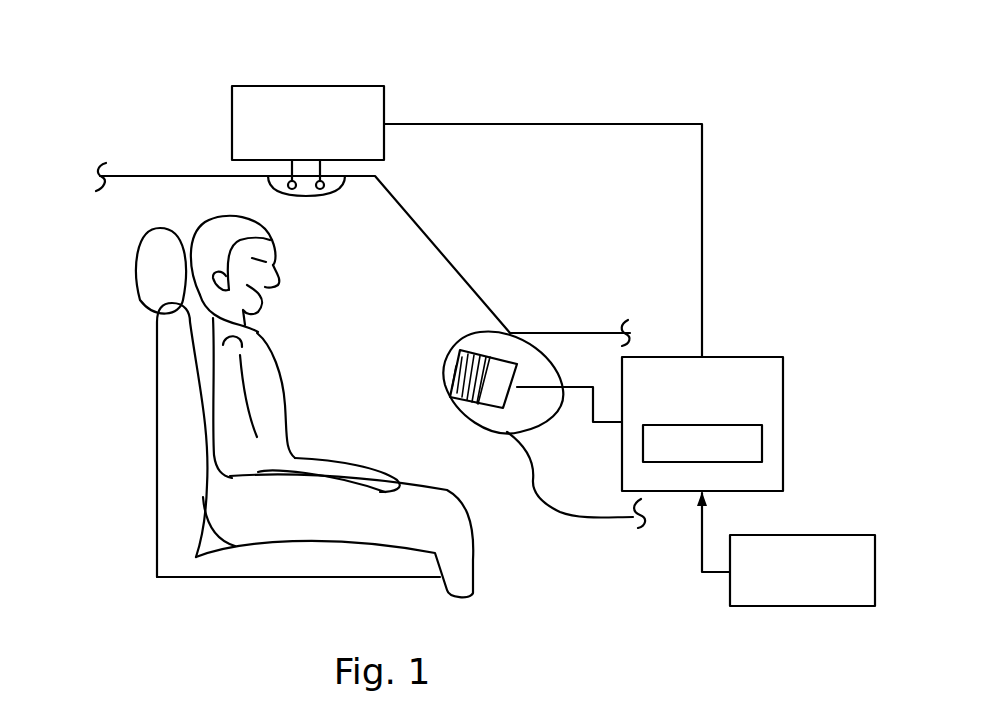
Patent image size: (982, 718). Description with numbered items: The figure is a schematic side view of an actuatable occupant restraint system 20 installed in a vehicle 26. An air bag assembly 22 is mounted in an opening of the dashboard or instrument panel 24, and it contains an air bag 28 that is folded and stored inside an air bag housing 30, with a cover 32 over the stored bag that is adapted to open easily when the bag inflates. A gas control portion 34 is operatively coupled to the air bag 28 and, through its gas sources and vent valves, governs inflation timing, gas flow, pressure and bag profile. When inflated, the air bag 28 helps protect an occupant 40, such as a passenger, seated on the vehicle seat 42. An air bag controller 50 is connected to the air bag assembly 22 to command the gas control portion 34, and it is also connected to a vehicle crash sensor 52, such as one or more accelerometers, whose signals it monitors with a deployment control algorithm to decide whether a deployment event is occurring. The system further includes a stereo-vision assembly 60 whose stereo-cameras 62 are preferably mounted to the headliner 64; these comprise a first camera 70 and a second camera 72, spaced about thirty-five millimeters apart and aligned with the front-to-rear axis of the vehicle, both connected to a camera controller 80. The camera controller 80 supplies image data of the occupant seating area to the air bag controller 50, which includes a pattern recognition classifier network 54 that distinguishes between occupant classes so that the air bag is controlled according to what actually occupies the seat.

The actuatable occupant restraint system 20 is at (602, 91).
The air bag assembly 22 is at (497, 349).
The instrument panel 24 is at (480, 331).
The vehicle 26 is at (180, 174).
The air bag 28 is at (450, 398).
The air bag housing 30 is at (487, 407).
The cover 32 is at (443, 370).
The gas control portion 34 is at (507, 404).
The occupant 40 is at (258, 332).
The vehicle seat 42 is at (155, 385).
The air bag controller 50 is at (749, 356).
The vehicle crash sensor 52 is at (806, 532).
The pattern recognition classifier network 54 is at (702, 463).
The stereo-vision assembly 60 is at (160, 75).
The stereo-cameras 62 is at (272, 190).
The headliner 64 is at (200, 177).
The first camera 70 is at (292, 196).
The second camera 72 is at (323, 194).
The camera controller 80 is at (368, 86).